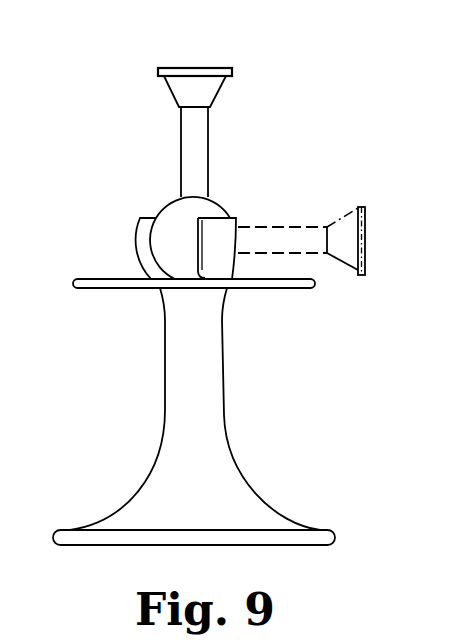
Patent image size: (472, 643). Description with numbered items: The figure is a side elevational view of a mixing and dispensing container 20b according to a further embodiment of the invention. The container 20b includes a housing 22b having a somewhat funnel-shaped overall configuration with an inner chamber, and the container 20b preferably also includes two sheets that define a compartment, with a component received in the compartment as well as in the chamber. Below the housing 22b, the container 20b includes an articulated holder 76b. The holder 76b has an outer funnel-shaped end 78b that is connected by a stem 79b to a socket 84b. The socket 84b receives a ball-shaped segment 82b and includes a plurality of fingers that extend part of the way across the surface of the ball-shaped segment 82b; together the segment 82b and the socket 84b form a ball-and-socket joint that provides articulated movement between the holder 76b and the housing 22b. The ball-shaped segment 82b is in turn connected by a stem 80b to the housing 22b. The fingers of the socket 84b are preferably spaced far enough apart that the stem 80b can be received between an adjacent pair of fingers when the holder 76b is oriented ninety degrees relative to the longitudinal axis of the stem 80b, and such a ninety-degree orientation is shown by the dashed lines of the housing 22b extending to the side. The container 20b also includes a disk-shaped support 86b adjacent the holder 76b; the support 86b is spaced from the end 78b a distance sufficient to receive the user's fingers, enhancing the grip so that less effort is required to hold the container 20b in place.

The mixing and dispensing container 20b is at (125, 405).
The housing 22b is at (223, 66).
The articulated holder 76b is at (258, 481).
The outer funnel-shaped end 78b is at (73, 538).
The stem 79b is at (203, 375).
The stem 80b is at (190, 188).
The ball-shaped segment 82b is at (173, 217).
The socket 84b is at (140, 247).
The disk-shaped support 86b is at (108, 283).